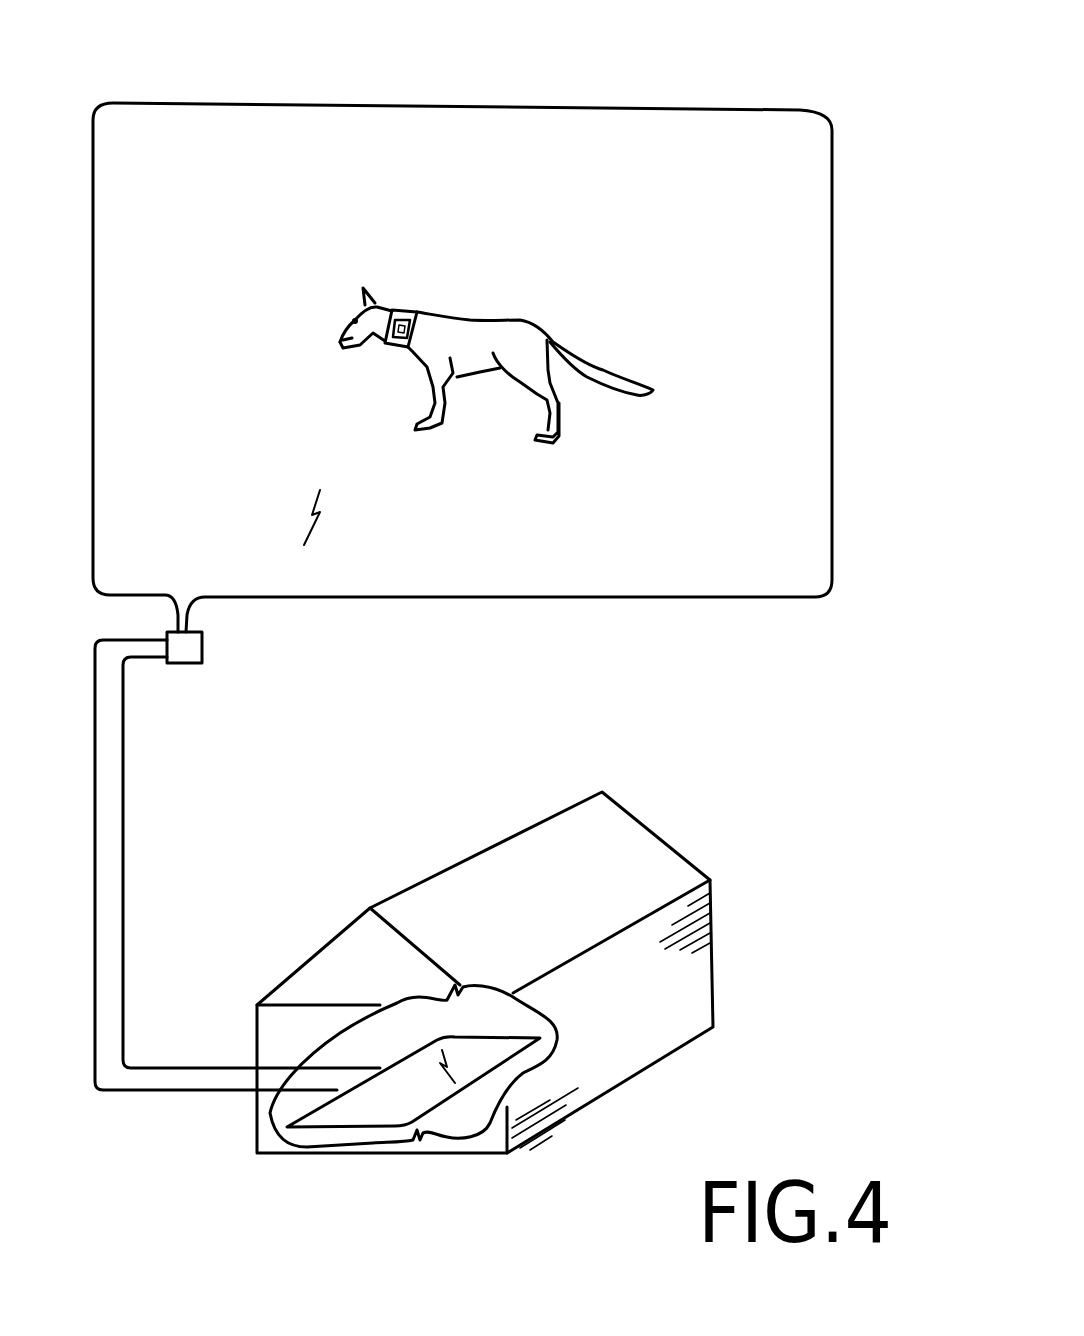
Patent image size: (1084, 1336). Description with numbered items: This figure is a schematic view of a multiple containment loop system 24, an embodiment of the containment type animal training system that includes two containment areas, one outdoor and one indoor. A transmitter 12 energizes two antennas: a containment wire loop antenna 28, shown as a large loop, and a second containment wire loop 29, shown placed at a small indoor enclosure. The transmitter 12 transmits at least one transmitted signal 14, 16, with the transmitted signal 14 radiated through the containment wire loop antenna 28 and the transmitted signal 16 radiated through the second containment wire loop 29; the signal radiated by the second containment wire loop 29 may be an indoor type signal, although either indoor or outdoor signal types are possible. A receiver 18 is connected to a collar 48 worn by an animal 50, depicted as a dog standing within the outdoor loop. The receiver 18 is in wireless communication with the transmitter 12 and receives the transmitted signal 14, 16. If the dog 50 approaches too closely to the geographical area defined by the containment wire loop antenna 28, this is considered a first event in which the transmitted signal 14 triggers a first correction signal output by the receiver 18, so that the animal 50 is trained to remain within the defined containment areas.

The transmitter 12 is at (203, 648).
The transmitted signal 14 is at (318, 513).
The transmitted signal 16 is at (435, 1057).
The receiver 18 is at (396, 308).
The multiple containment loop system 24 is at (850, 68).
The containment wire loop antenna 28 is at (357, 103).
The second containment wire loop 29 is at (313, 1130).
The collar 48 is at (402, 305).
The animal 50 is at (522, 318).